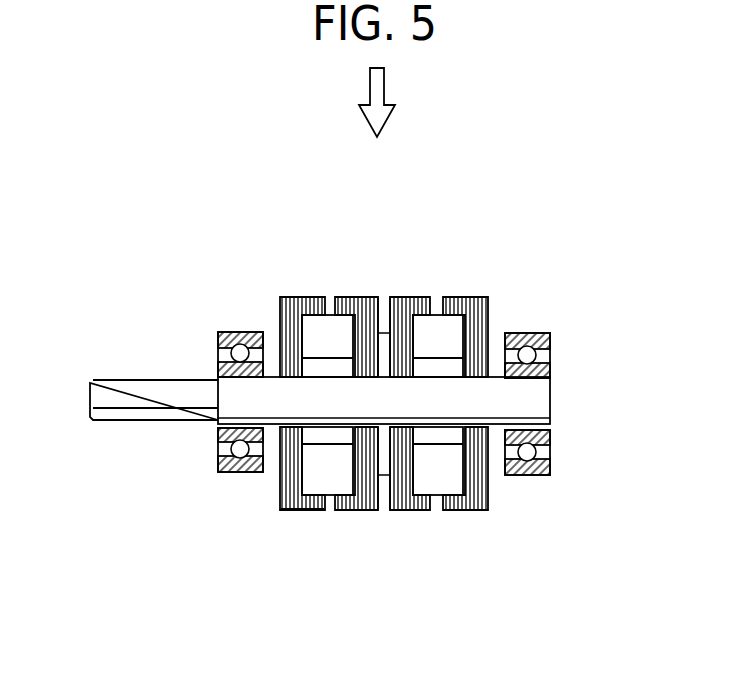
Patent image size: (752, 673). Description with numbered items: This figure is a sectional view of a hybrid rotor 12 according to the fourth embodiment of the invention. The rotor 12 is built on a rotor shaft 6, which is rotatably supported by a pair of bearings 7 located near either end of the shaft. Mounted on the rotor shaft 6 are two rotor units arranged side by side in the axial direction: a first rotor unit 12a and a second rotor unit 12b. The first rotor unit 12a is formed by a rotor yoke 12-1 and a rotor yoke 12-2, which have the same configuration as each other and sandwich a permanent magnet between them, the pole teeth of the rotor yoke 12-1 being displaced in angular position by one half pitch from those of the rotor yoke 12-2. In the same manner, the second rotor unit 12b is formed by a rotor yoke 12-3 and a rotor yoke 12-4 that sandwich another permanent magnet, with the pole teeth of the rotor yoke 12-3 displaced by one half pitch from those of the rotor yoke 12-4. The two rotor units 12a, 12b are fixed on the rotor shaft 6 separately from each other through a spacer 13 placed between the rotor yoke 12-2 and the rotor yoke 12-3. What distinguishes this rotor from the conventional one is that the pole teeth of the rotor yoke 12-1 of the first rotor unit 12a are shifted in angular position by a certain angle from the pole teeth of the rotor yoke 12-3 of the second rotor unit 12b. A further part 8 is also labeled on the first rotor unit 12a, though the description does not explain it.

The rotor shaft 6 is at (89, 382).
The bearing 7 is at (218, 338).
The yoke (bobbin flange) 8 is at (295, 511).
The rotor 12 is at (419, 374).
The first rotor unit 12a is at (334, 383).
The second rotor unit 12b is at (472, 372).
The rotor yoke 12-1 is at (299, 297).
The rotor yoke 12-2 is at (366, 298).
The rotor yoke 12-3 is at (418, 297).
The rotor yoke 12-4 is at (477, 297).
The spacer 13 is at (385, 476).